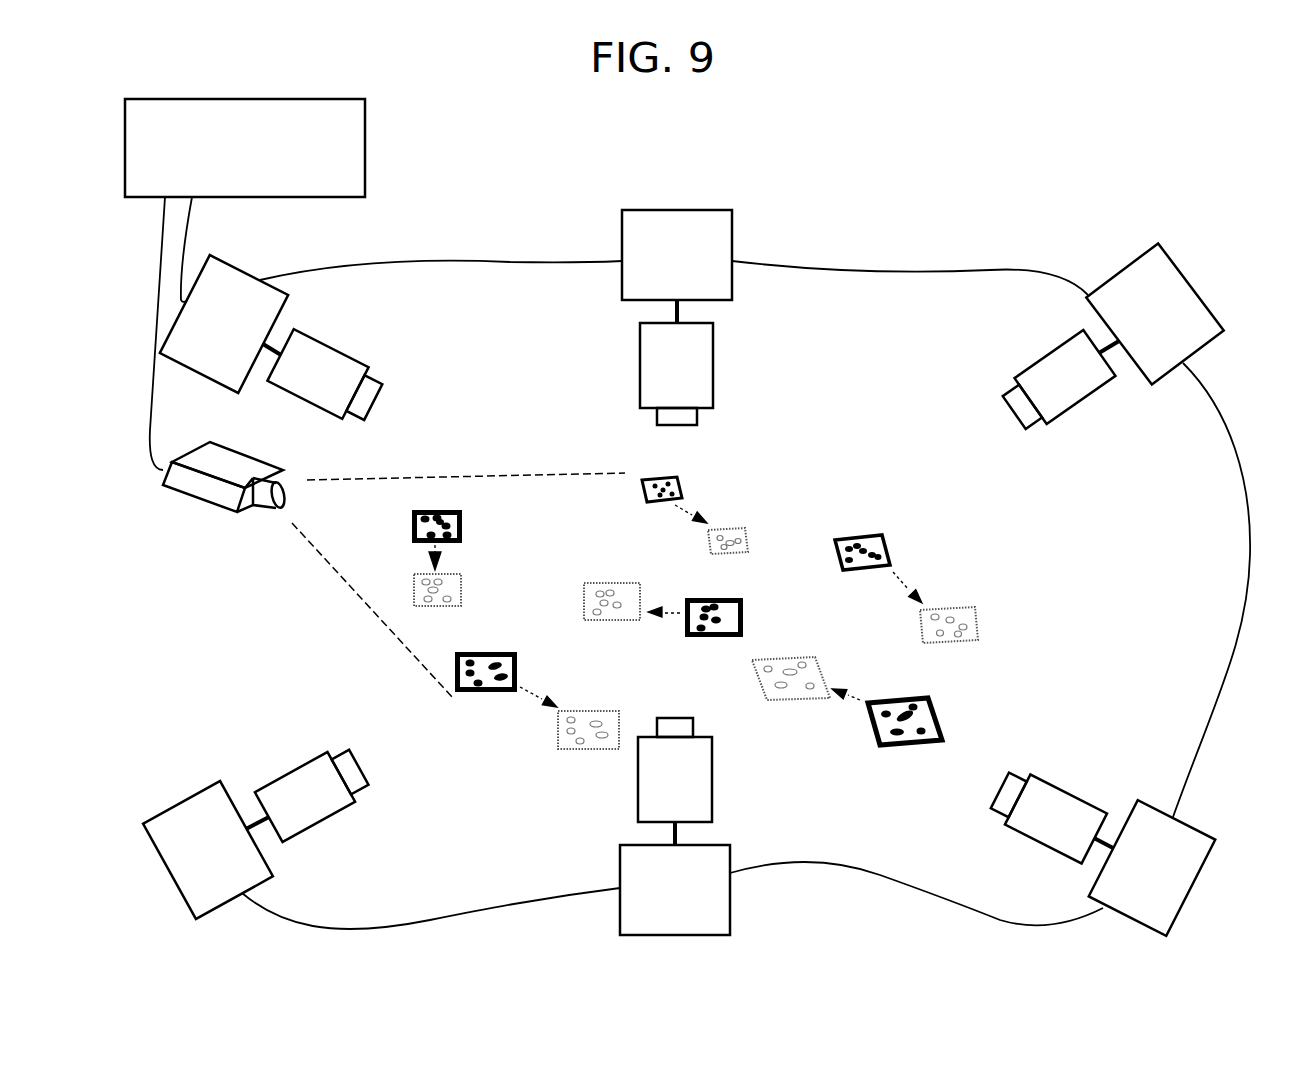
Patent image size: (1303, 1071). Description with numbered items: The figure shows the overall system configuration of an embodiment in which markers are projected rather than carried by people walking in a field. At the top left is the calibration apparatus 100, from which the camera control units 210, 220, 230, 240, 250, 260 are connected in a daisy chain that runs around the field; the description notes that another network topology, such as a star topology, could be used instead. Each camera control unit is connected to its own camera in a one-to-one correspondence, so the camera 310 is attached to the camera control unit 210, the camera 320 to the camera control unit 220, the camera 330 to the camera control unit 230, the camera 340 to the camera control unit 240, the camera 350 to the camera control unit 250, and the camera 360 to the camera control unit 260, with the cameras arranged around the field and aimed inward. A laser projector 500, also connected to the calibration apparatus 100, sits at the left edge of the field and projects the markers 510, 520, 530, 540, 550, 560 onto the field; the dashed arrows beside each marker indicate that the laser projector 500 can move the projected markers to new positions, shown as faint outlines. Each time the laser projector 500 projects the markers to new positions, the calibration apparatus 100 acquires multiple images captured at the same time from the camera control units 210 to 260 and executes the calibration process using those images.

The calibration apparatus 100 is at (367, 112).
The camera control unit 210 is at (243, 272).
The camera control unit 220 is at (675, 208).
The camera control unit 230 is at (1132, 262).
The camera control unit 240 is at (1203, 865).
The camera control unit 250 is at (730, 897).
The camera control unit 260 is at (182, 798).
The camera 310 is at (338, 347).
The camera 320 is at (713, 363).
The camera 330 is at (1033, 363).
The camera 340 is at (1078, 795).
The camera 350 is at (712, 782).
The camera 360 is at (272, 780).
The laser projector 500 is at (190, 507).
The marker 510 is at (402, 523).
The marker 520 is at (688, 485).
The marker 530 is at (860, 535).
The marker 540 is at (502, 645).
The marker 550 is at (752, 618).
The marker 560 is at (943, 712).